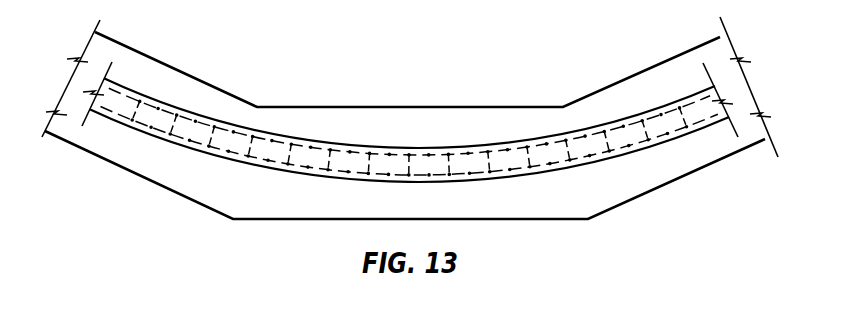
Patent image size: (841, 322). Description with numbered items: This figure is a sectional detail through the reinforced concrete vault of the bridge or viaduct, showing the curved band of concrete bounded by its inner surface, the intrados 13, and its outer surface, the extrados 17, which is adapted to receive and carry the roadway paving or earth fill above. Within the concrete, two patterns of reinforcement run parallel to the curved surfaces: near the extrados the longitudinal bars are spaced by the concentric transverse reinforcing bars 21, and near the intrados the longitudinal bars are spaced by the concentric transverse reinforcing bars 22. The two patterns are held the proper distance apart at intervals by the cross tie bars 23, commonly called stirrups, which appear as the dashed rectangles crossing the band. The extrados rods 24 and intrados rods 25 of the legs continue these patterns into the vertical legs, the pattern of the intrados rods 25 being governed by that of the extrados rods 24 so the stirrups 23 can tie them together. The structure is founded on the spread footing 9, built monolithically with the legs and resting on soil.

The foundation footing 9 is at (595, 206).
The intrados 13 is at (300, 138).
The extrados 17 is at (269, 170).
The concentric transverse reinforcing bars 21 is at (502, 178).
The concentric transverse reinforcing bars 22 is at (538, 138).
The cross tie bars 23 is at (176, 125).
The extrados rods 24 is at (387, 182).
The intrados rods 25 is at (427, 152).